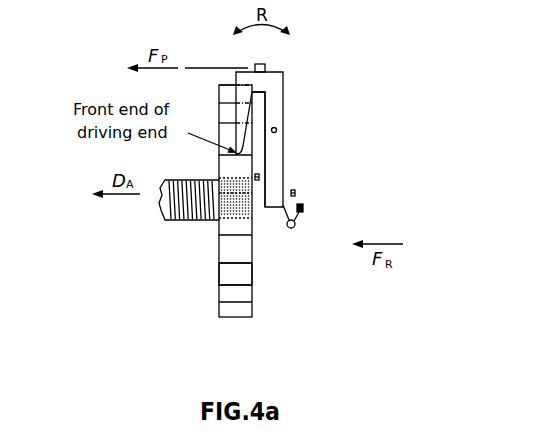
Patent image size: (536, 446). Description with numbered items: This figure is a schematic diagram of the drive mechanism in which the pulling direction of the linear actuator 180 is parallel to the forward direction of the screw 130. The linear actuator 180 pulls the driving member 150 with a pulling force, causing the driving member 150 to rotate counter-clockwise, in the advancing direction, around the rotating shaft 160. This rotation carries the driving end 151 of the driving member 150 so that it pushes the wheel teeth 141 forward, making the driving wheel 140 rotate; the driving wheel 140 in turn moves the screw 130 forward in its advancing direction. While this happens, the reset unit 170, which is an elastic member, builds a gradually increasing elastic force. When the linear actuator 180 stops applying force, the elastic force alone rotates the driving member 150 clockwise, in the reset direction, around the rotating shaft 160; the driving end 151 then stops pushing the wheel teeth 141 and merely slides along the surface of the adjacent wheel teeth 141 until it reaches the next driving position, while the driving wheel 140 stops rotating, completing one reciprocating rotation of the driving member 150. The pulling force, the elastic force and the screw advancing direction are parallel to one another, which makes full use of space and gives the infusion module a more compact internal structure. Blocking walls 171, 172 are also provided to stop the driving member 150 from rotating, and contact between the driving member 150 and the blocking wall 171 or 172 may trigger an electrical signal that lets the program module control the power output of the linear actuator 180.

The screw 130 is at (187, 218).
The driving wheel 140 is at (230, 318).
The wheel teeth 141 is at (245, 280).
The driving member 150 is at (273, 87).
The driving end 151 is at (247, 152).
The rotating shaft 160 is at (278, 129).
The reset unit 170 is at (296, 225).
The blocking wall 171 is at (261, 177).
The blocking wall 172 is at (297, 194).
The linear actuator 180 is at (193, 67).